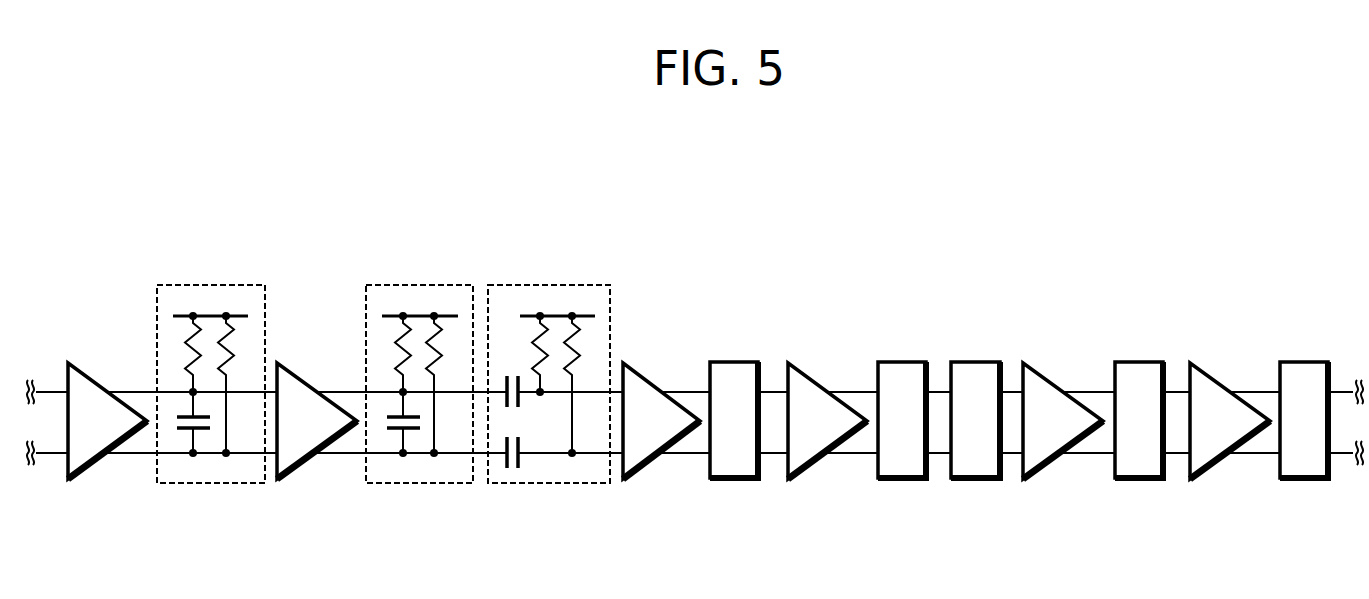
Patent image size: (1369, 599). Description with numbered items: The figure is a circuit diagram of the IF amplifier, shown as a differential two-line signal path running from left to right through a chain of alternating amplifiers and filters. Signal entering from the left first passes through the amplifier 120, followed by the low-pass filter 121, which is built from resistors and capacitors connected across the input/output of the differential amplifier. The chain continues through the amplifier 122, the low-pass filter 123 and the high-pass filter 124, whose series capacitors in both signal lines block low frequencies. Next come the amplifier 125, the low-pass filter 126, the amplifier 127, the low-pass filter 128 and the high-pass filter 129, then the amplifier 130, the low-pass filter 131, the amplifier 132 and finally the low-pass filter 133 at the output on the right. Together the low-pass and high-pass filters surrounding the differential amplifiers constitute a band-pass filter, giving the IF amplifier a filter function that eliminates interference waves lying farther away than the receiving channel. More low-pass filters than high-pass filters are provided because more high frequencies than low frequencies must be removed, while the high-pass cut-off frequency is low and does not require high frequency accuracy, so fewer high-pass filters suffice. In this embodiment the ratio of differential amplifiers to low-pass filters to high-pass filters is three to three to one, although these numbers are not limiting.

The amplifier 120 is at (88, 374).
The low-pass filter 121 is at (212, 285).
The amplifier 122 is at (292, 374).
The low-pass filter 123 is at (420, 285).
The high-pass filter 124 is at (557, 285).
The amplifier 125 is at (648, 372).
The low-pass filter 126 is at (735, 362).
The amplifier 127 is at (816, 372).
The low-pass filter 128 is at (902, 362).
The high-pass filter 129 is at (974, 362).
The amplifier 130 is at (1051, 372).
The low-pass filter 131 is at (1139, 362).
The amplifier 132 is at (1216, 372).
The low-pass filter 133 is at (1304, 362).